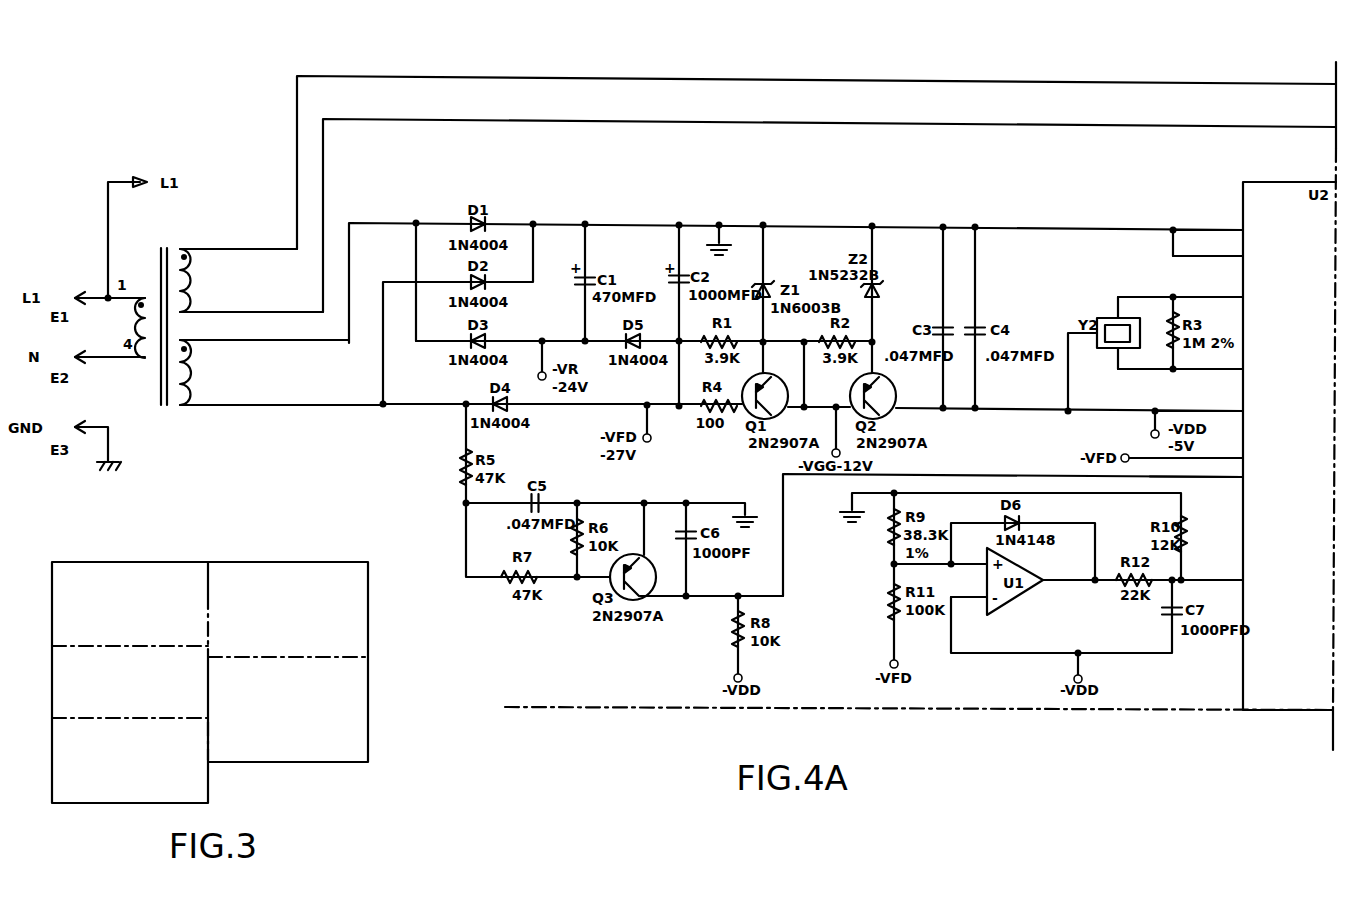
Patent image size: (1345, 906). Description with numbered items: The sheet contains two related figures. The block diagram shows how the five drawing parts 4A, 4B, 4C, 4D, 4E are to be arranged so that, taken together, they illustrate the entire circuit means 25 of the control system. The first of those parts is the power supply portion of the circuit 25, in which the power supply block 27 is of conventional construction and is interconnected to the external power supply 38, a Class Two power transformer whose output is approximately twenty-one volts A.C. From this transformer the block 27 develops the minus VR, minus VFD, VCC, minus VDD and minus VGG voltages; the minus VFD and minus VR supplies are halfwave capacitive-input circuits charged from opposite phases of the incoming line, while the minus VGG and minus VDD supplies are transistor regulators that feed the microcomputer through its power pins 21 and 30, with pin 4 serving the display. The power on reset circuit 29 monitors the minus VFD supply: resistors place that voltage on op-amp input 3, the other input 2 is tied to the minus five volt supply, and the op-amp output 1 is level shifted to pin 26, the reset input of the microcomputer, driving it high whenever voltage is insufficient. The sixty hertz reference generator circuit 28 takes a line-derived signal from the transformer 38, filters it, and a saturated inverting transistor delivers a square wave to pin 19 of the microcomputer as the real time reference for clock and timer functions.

In FIG. 3, the circuit means 25 is at (210, 658).
In FIG. 4A, the circuit means 25 is at (940, 70).
In FIG. 4A, the external power supply 38 is at (183, 240).
In FIG. 3, the circuit part 4A is at (130, 604).
In FIG. 3, the circuit part 4B is at (130, 682).
In FIG. 3, the circuit part 4C is at (130, 760).
In FIG. 3, the circuit part 4D is at (288, 609).
In FIG. 3, the circuit part 4E is at (288, 706).
In FIG. 4A, the VCC pin 21 is at (1227, 225).
In FIG. 4A, the power supply block 27 is at (1231, 251).
In FIG. 4A, the 60 Hz reference generator circuit 28 is at (1205, 293).
In FIG. 4A, the power on reset circuit 29 is at (1205, 365).
In FIG. 4A, the GND pin 30 is at (1220, 406).
In FIG. 4A, the VDISP pin 4 is at (1213, 453).
In FIG. 4A, the pin 19 of the microcomputer 19 is at (1237, 474).
In FIG. 4A, the pin 26 of the microcomputer 26 is at (1240, 575).
In FIG. 4A, the op-amp output U1- 1 is at (1069, 572).
In FIG. 4A, the op-amp input U1- 2 is at (969, 608).
In FIG. 4A, the op-amp input U1- 3 is at (969, 554).